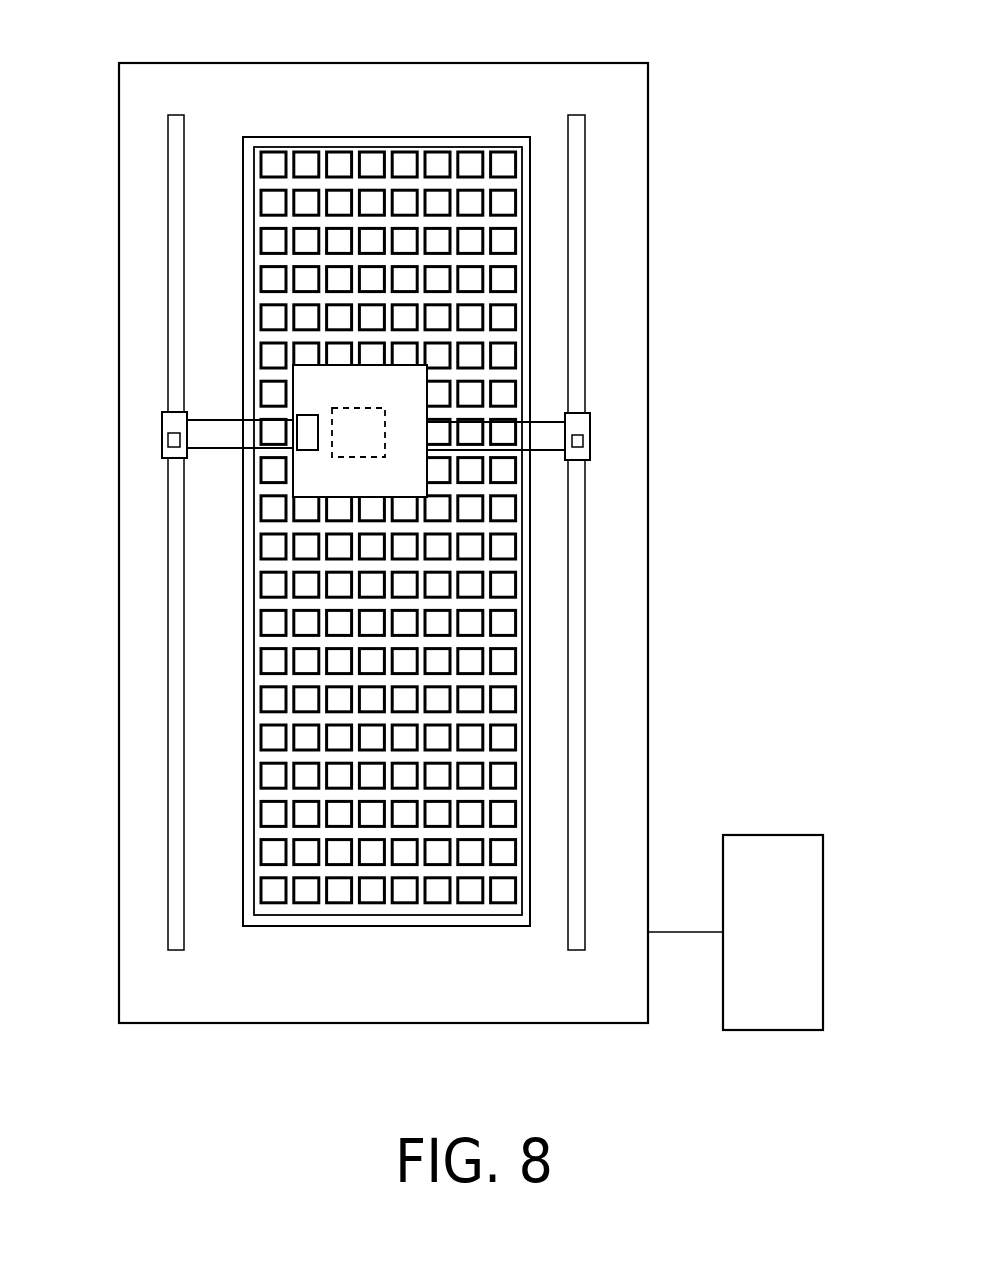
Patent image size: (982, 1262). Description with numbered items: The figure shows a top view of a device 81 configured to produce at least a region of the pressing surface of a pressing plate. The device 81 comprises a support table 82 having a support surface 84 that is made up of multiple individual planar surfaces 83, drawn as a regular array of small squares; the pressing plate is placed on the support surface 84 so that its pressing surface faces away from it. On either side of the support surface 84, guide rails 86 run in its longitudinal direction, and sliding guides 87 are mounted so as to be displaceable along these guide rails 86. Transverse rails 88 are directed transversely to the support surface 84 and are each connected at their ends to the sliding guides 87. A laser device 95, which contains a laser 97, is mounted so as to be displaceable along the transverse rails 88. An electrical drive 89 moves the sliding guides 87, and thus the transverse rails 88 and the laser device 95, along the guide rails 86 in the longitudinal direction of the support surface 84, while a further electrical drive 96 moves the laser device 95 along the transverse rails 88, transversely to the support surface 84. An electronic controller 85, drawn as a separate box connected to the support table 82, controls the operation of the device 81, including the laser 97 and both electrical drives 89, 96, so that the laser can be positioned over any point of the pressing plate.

The device 81 is at (428, 515).
The support table 82 is at (627, 715).
The individual planar surfaces 83 is at (408, 165).
The support surface 84 is at (348, 493).
The electronic controller 85 is at (790, 946).
The guide rails 86 is at (175, 333).
The sliding guides 87 is at (163, 415).
The transverse rails 88 is at (230, 427).
The electrical drive 89 is at (585, 437).
The laser device 95 is at (303, 388).
The further electrical drive 96 is at (303, 430).
The laser 97 is at (375, 452).